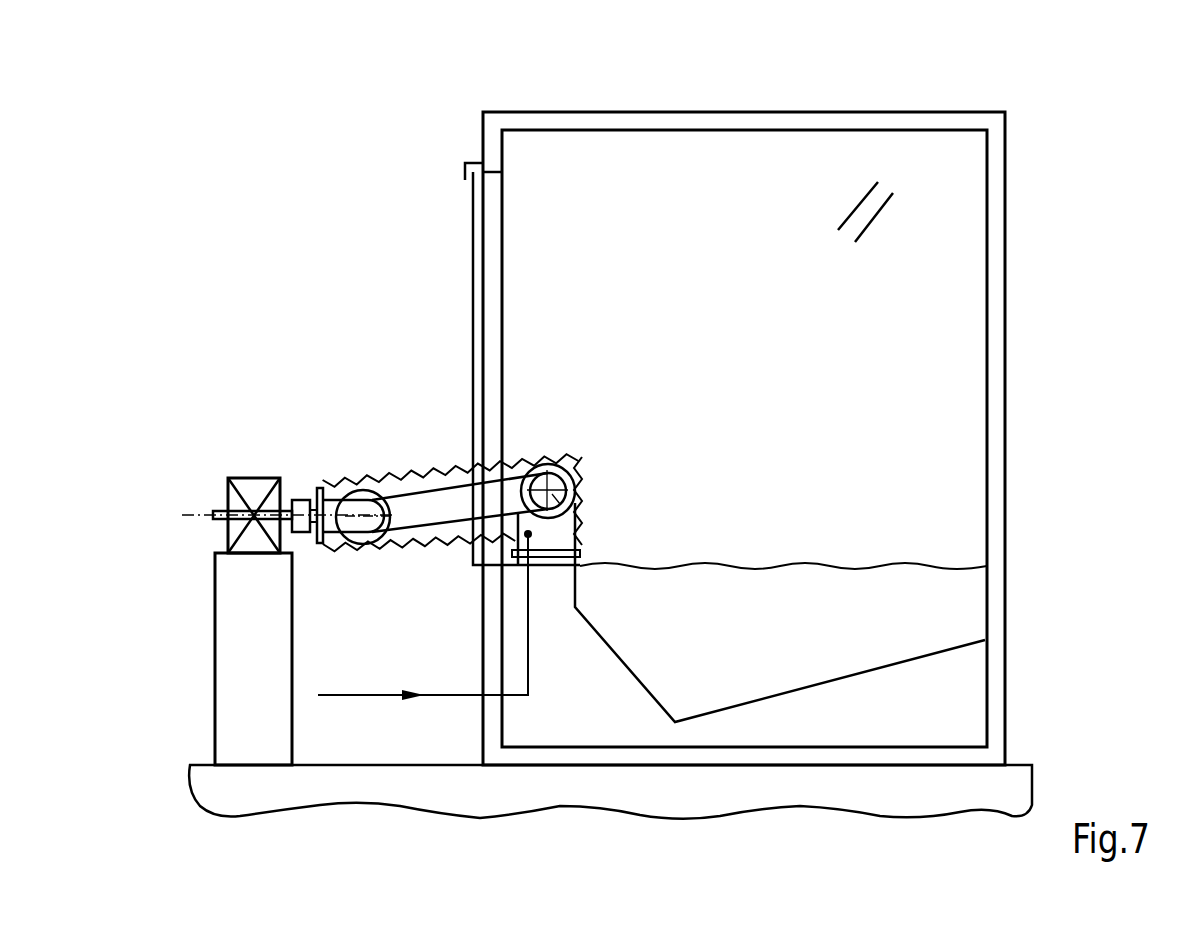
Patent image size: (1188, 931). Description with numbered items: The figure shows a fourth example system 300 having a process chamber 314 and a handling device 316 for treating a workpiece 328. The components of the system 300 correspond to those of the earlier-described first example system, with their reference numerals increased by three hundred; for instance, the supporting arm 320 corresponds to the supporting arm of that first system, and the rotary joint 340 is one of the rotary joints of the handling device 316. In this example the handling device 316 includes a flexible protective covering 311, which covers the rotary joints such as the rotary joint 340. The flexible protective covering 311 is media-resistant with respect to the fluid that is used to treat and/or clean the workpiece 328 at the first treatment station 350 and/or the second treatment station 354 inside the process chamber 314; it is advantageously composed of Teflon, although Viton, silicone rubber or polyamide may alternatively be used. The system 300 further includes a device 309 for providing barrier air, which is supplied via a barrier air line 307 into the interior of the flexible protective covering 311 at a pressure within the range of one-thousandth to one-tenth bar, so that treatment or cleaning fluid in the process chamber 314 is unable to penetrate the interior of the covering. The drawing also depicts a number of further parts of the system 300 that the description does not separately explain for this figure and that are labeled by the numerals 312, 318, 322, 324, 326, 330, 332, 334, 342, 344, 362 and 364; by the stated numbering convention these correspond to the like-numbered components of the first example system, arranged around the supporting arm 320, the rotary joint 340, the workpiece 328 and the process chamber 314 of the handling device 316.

The fourth example system 300 is at (818, 406).
The barrier air line 307 is at (328, 697).
The device for providing barrier air 309 is at (312, 660).
The flexible protective covering 311 is at (427, 550).
The pedestal 312 is at (232, 735).
The process chamber 314 is at (768, 120).
The handling device 316 is at (452, 494).
The bracket 318 is at (557, 565).
The supporting arm 320 is at (458, 490).
The shaft 322 is at (330, 490).
The coupling 324 is at (300, 530).
The drive rod 326 is at (220, 510).
The workpiece 328 is at (253, 478).
The pivot axis 330 is at (575, 508).
The joint axis 332 is at (373, 548).
The base plate 334 is at (1022, 765).
The rotary joint 340 is at (570, 470).
The ball joint 342 is at (360, 511).
The drive axis 344 is at (186, 517).
The first treatment station 350 is at (968, 614).
The second treatment station 354 is at (887, 198).
The housing wall 362 is at (503, 266).
The supply line 364 is at (473, 230).